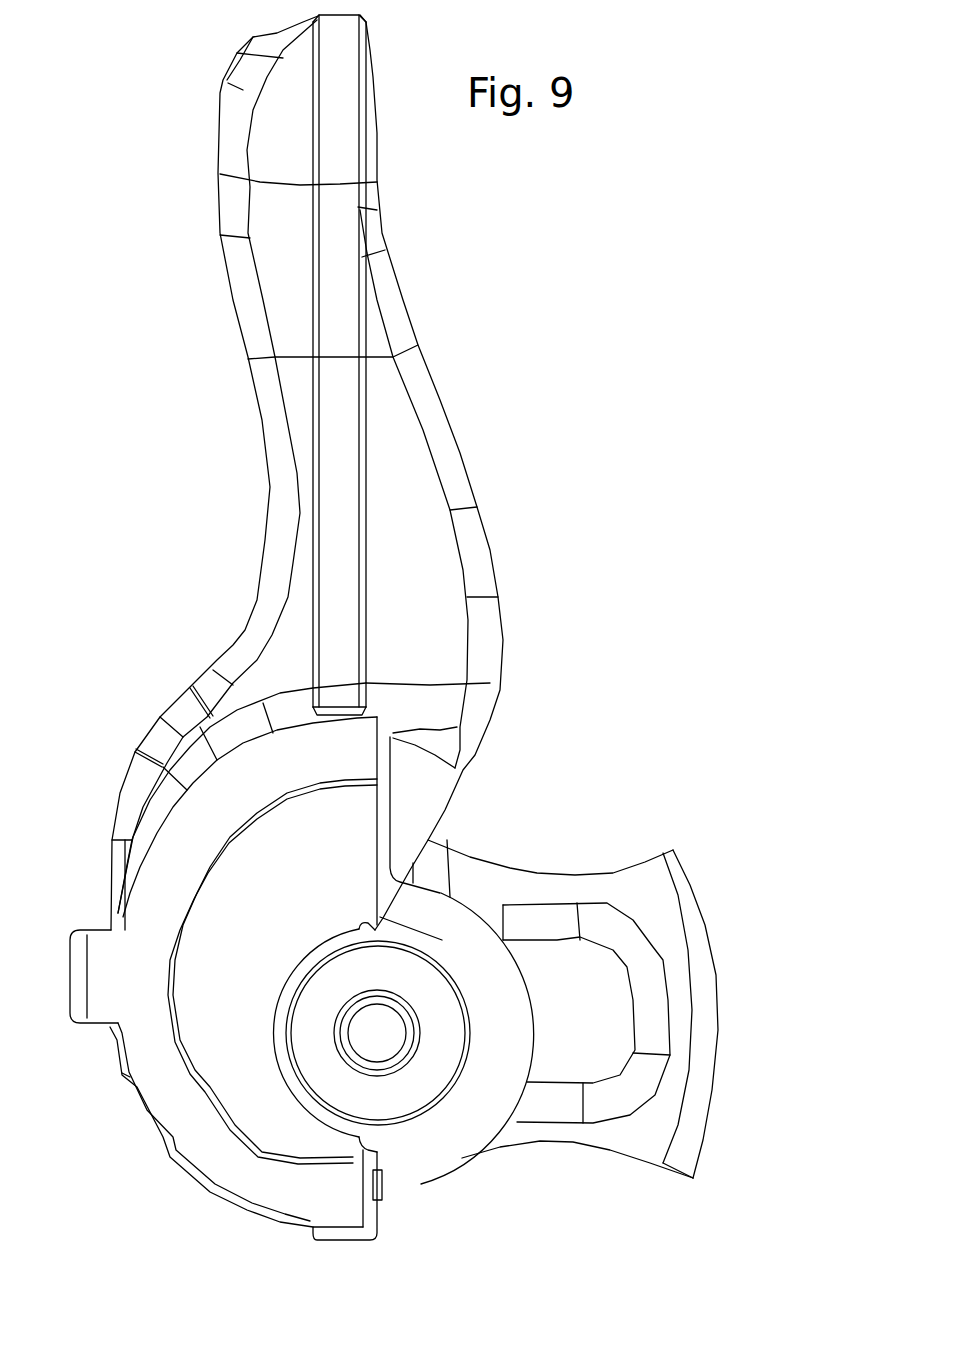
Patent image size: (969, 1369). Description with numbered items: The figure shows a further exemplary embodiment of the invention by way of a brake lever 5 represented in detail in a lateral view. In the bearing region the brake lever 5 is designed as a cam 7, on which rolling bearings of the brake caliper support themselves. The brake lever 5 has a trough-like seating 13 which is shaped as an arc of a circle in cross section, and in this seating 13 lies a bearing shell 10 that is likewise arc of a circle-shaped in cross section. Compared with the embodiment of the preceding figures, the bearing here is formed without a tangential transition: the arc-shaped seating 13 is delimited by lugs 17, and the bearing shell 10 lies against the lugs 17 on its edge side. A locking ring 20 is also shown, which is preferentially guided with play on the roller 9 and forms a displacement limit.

The brake lever 5 is at (423, 430).
The cam 7 is at (152, 1042).
The roller 9 is at (430, 1067).
The bearing shell 10 is at (300, 1093).
The seating 13 is at (317, 1127).
The lugs 17 is at (442, 940).
The locking ring 20 is at (427, 1155).